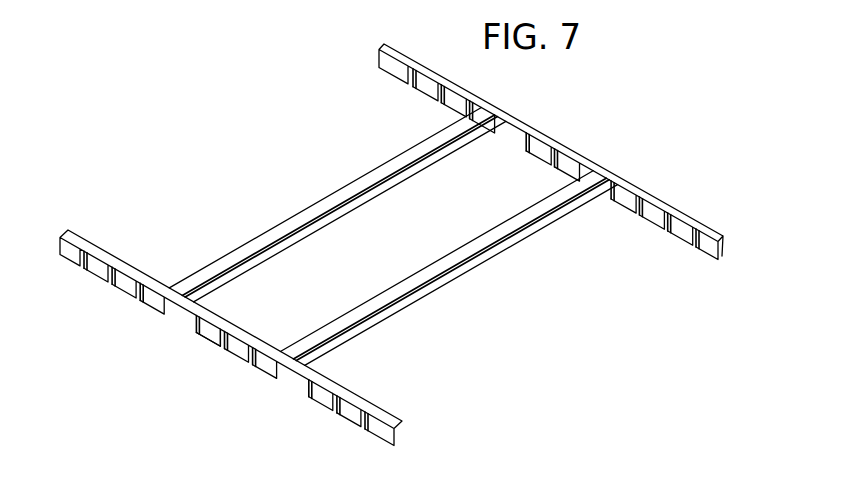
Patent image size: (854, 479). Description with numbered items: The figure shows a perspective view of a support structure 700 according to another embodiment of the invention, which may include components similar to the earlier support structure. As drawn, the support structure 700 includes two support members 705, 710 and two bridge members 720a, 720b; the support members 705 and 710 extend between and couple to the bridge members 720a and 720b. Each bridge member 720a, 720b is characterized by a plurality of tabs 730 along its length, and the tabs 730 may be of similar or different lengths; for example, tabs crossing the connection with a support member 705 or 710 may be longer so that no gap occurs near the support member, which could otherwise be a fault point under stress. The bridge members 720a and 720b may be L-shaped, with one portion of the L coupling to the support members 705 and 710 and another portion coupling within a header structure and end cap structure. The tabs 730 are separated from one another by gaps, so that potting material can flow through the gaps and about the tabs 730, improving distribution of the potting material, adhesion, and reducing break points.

The support structure 700 is at (246, 140).
The support member 705 is at (437, 272).
The support member 710 is at (249, 249).
The bridge member 720a is at (368, 401).
The bridge member 720b is at (573, 152).
The tab 730 is at (212, 343).